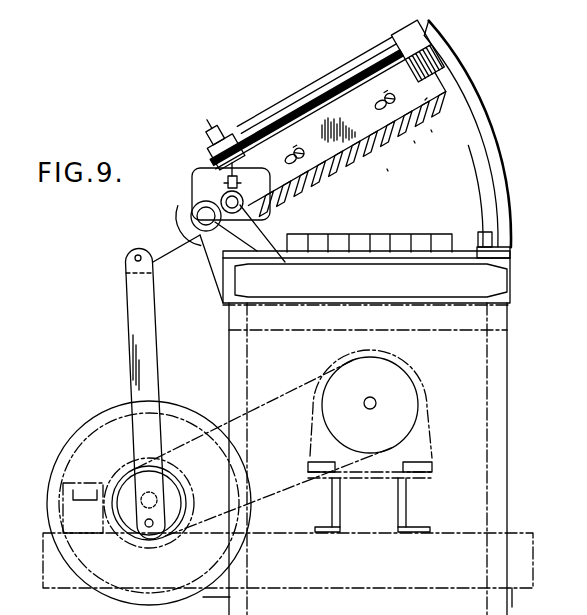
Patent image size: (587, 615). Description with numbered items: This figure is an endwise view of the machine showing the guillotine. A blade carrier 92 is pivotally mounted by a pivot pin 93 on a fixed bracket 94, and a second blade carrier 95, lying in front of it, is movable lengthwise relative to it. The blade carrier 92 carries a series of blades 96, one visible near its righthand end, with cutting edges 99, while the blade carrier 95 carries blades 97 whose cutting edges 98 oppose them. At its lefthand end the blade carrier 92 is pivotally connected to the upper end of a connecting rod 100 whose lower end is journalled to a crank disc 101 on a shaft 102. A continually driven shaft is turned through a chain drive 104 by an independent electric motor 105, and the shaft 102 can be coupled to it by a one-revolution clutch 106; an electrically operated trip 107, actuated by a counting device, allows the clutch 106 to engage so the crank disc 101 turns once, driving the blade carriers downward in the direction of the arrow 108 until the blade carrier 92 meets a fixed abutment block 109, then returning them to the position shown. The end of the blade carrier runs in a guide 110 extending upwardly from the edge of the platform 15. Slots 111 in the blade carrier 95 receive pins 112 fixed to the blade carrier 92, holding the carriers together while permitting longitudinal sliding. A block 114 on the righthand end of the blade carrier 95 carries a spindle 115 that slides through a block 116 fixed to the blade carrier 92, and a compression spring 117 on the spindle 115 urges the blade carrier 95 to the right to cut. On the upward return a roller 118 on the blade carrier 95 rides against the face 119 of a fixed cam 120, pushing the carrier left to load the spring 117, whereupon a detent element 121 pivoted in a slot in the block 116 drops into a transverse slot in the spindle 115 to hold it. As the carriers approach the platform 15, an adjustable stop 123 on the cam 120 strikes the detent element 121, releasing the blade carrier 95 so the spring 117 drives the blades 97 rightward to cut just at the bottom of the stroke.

The platform 15 is at (268, 263).
The blade carrier 92 is at (450, 82).
The pivot pin 93 is at (200, 240).
The fixed bracket 94 is at (218, 273).
The second blade carrier 95 is at (425, 100).
The blades 96 is at (432, 132).
The blades 97 is at (415, 143).
The cutting edges 98 is at (388, 171).
The cutting edges 99 is at (400, 135).
The connecting rod 100 is at (150, 360).
The crank disc 101 is at (120, 515).
The shaft 102 is at (153, 500).
The chain drive 104 is at (293, 387).
The electric motor 105 is at (395, 420).
The clutch 106 is at (143, 542).
The trip 107 is at (70, 510).
The arrow 108 is at (469, 170).
The fixed abutment block 109 is at (512, 245).
The guide 110 is at (492, 145).
The slots 111 is at (350, 112).
The pins 112 is at (390, 98).
The block 114 is at (405, 43).
The spindle 115 is at (297, 105).
The block 116 is at (213, 157).
The compression spring 117 is at (282, 108).
The roller 118 is at (268, 232).
The cam face 119 is at (276, 169).
The fixed cam 120 is at (289, 157).
The detent element 121 is at (222, 137).
The adjustable stop 123 is at (232, 183).